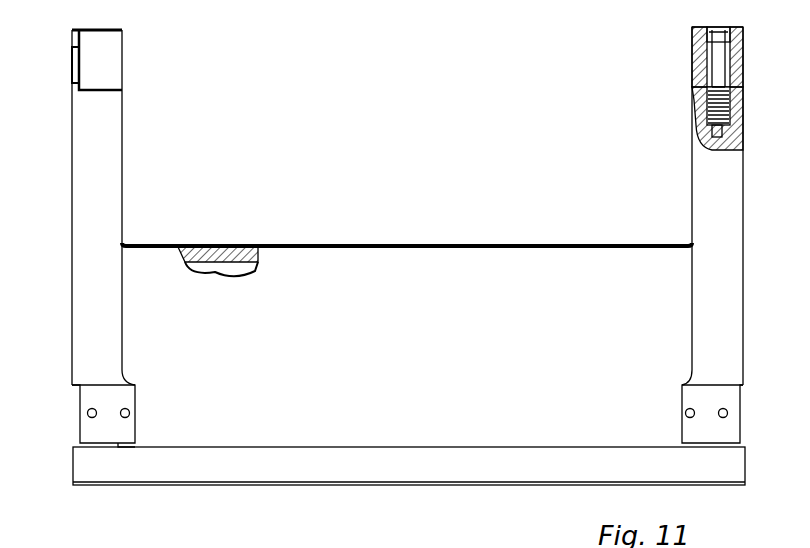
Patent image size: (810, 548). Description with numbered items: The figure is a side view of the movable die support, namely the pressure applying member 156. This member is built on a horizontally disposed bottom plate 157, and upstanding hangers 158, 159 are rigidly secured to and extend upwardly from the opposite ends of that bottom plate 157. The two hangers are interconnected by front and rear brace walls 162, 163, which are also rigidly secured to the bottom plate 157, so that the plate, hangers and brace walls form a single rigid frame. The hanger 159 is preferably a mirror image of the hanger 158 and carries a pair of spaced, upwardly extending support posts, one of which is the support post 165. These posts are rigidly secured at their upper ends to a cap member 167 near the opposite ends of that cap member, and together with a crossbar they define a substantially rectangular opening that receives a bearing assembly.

The pressure applying member 156 is at (163, 487).
The bottom plate 157 is at (426, 470).
The hanger 158 is at (122, 198).
The hanger 159 is at (692, 198).
The front brace wall 162 is at (343, 332).
The rear brace wall 163 is at (232, 272).
The support post 165 is at (713, 176).
The cap member 167 is at (697, 69).